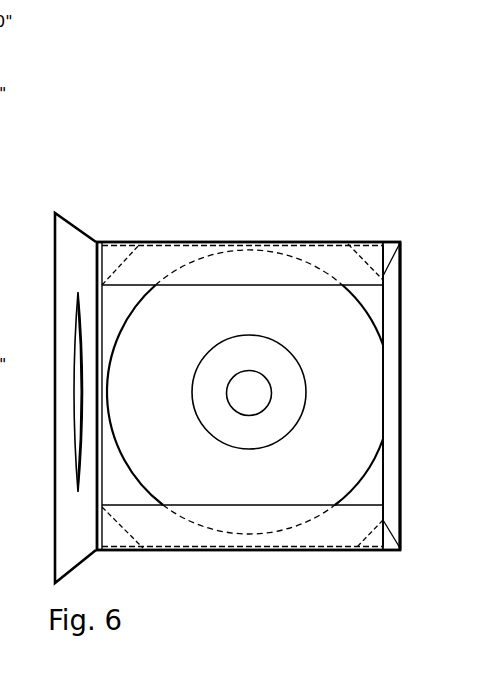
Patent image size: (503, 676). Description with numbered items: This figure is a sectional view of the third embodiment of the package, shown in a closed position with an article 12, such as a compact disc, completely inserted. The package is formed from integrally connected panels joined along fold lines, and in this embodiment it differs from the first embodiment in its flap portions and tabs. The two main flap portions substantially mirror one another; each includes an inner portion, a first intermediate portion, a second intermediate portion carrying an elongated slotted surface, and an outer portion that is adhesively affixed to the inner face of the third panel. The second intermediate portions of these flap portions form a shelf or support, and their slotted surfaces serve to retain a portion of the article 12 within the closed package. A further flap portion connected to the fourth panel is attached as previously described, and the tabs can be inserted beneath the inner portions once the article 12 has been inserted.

The fragile article 12 is at (360, 367).